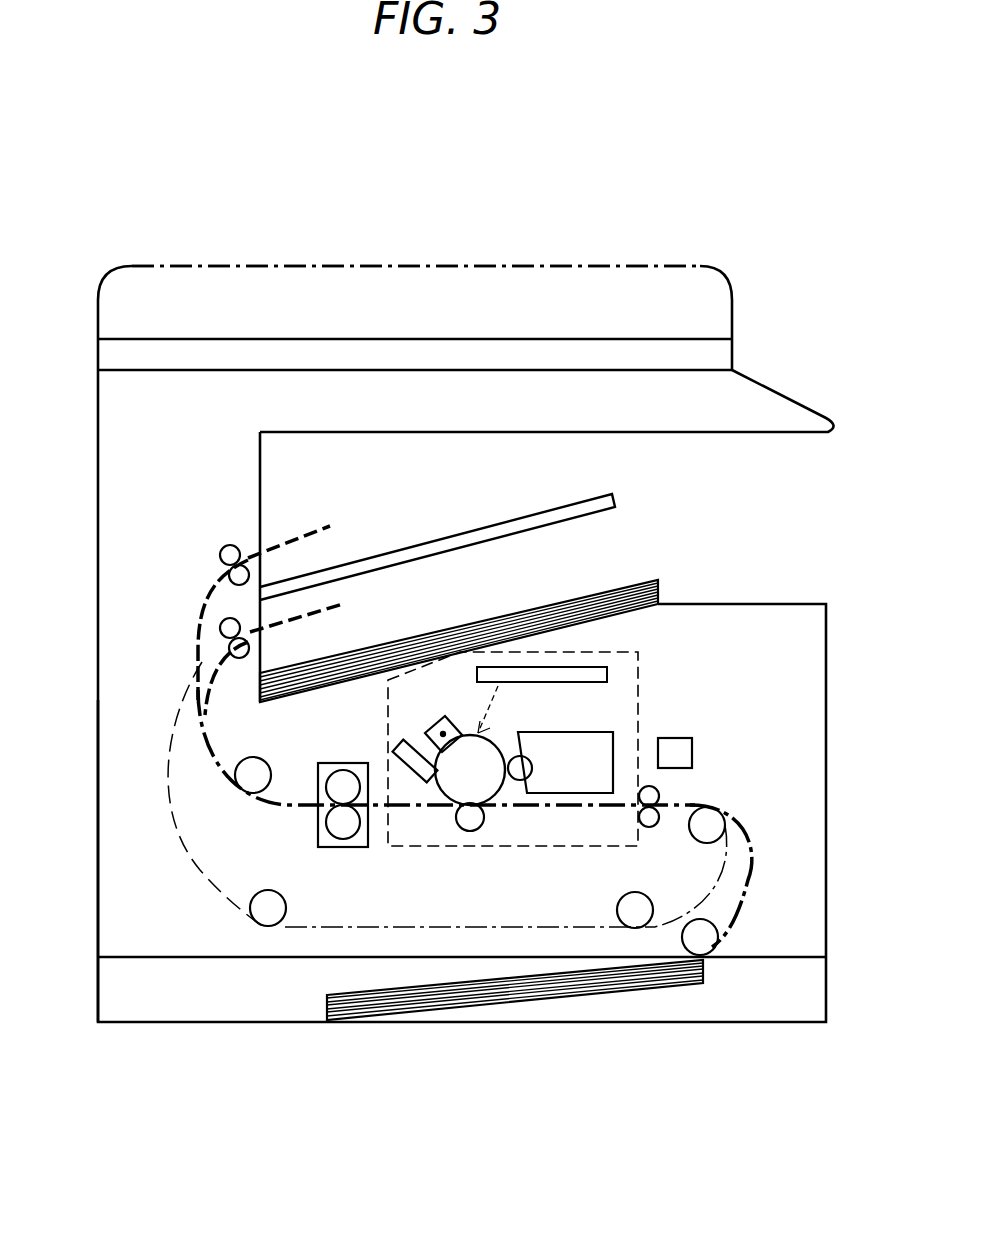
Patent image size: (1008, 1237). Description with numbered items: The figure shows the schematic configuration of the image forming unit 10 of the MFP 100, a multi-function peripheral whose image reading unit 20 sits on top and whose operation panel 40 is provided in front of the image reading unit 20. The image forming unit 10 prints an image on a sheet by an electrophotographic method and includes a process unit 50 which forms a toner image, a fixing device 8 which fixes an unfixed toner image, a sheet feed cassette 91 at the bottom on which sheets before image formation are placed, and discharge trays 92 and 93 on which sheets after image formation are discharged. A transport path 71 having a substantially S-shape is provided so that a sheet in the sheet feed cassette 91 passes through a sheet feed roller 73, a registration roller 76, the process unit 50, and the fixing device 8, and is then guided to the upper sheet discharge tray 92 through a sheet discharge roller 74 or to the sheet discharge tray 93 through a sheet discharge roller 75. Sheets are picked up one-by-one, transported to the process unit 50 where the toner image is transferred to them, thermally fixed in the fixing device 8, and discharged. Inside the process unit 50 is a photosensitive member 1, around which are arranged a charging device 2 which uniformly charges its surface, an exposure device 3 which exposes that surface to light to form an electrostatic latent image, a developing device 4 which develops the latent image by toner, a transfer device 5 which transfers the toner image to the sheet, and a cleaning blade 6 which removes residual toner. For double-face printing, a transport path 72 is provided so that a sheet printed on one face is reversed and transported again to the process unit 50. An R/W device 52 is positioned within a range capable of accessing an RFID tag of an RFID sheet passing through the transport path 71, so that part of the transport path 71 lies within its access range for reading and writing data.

The MFP 100 is at (648, 212).
The image forming unit 10 is at (120, 805).
The image reading unit 20 is at (205, 278).
The operation panel 40 is at (772, 387).
The process unit 50 is at (643, 695).
The photosensitive member 1 is at (480, 786).
The charging device 2 is at (438, 731).
The exposure device 3 is at (600, 667).
The developing device 4 is at (550, 732).
The transfer device 5 is at (470, 826).
The cleaning blade 6 is at (400, 738).
The fixing device 8 is at (345, 762).
The R/W device 52 is at (680, 753).
The transport path 71 is at (747, 858).
The transport path 72 is at (200, 873).
The sheet feed roller 73 is at (718, 930).
The sheet discharge roller 74 is at (240, 660).
The sheet discharge roller 75 is at (232, 545).
The registration roller 76 is at (652, 822).
The sheet feed cassette 91 is at (595, 985).
The sheet discharge tray 92 is at (585, 622).
The sheet discharge tray 93 is at (502, 513).